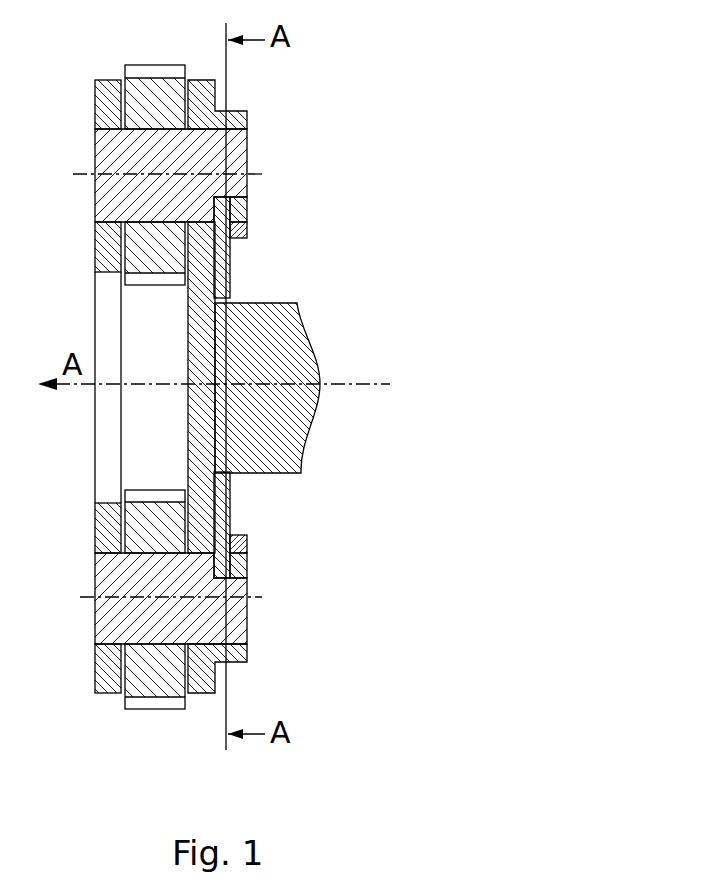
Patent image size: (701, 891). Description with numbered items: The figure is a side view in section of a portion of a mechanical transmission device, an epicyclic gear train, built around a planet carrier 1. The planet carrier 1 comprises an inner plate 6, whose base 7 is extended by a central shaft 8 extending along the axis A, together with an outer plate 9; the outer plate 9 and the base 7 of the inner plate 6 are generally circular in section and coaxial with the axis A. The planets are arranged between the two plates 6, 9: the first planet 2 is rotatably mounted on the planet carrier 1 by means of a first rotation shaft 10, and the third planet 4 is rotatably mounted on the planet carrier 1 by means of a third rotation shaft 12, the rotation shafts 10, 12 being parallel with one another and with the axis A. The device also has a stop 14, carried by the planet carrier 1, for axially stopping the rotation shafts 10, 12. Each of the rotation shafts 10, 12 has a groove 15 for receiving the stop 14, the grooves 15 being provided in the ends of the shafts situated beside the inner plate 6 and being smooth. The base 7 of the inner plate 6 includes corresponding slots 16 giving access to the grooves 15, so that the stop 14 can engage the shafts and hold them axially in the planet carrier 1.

The planet carrier 1 is at (362, 303).
The first planet 2 is at (158, 108).
The third planet 4 is at (157, 673).
The inner plate 6 is at (206, 66).
The base 7 is at (200, 272).
The central shaft 8 is at (285, 343).
The outer plate 9 is at (112, 107).
The first rotation shaft 10 is at (237, 148).
The third rotation shaft 12 is at (230, 615).
The stop 14 is at (230, 495).
The groove 15 is at (232, 200).
The slot 16 is at (232, 236).